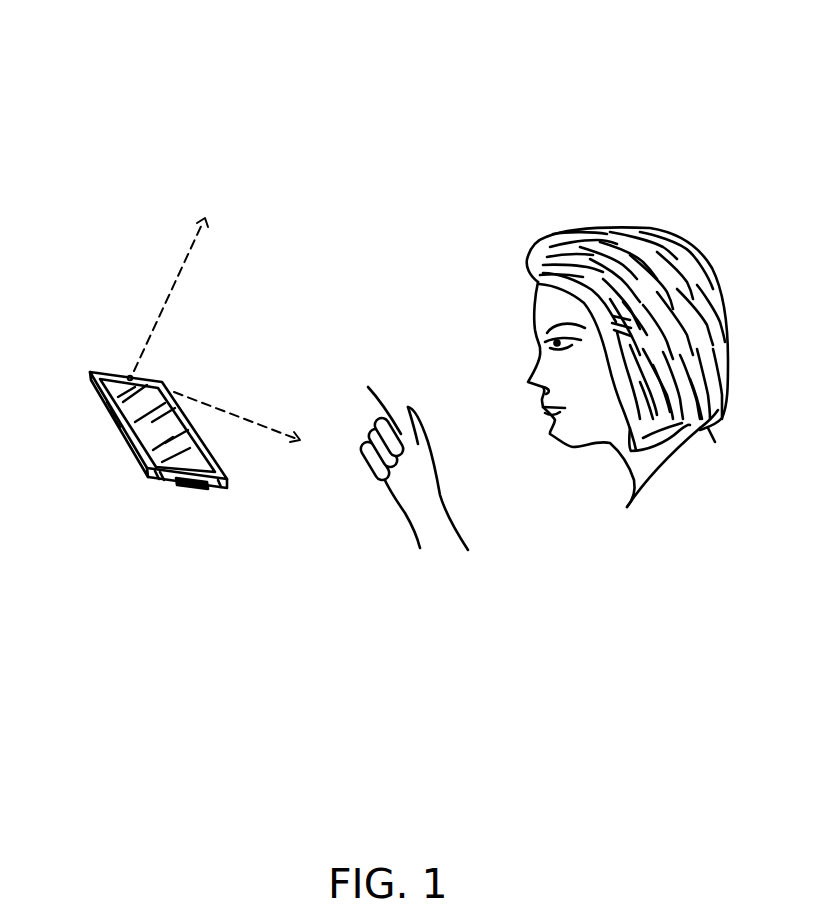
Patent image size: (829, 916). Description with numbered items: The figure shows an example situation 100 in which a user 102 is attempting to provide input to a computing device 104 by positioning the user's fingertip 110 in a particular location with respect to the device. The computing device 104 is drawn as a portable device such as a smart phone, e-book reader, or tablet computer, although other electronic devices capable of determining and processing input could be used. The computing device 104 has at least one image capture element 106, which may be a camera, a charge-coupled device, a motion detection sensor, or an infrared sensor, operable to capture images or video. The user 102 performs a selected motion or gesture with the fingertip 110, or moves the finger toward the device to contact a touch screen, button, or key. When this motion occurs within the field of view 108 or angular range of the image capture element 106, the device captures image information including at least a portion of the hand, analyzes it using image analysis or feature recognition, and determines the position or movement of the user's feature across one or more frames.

The example situation 100 is at (720, 118).
The user 102 is at (492, 284).
The computing device 104 is at (215, 488).
The image capture element 106 is at (130, 377).
The field of view 108 is at (195, 253).
The fingertip 110 is at (368, 387).